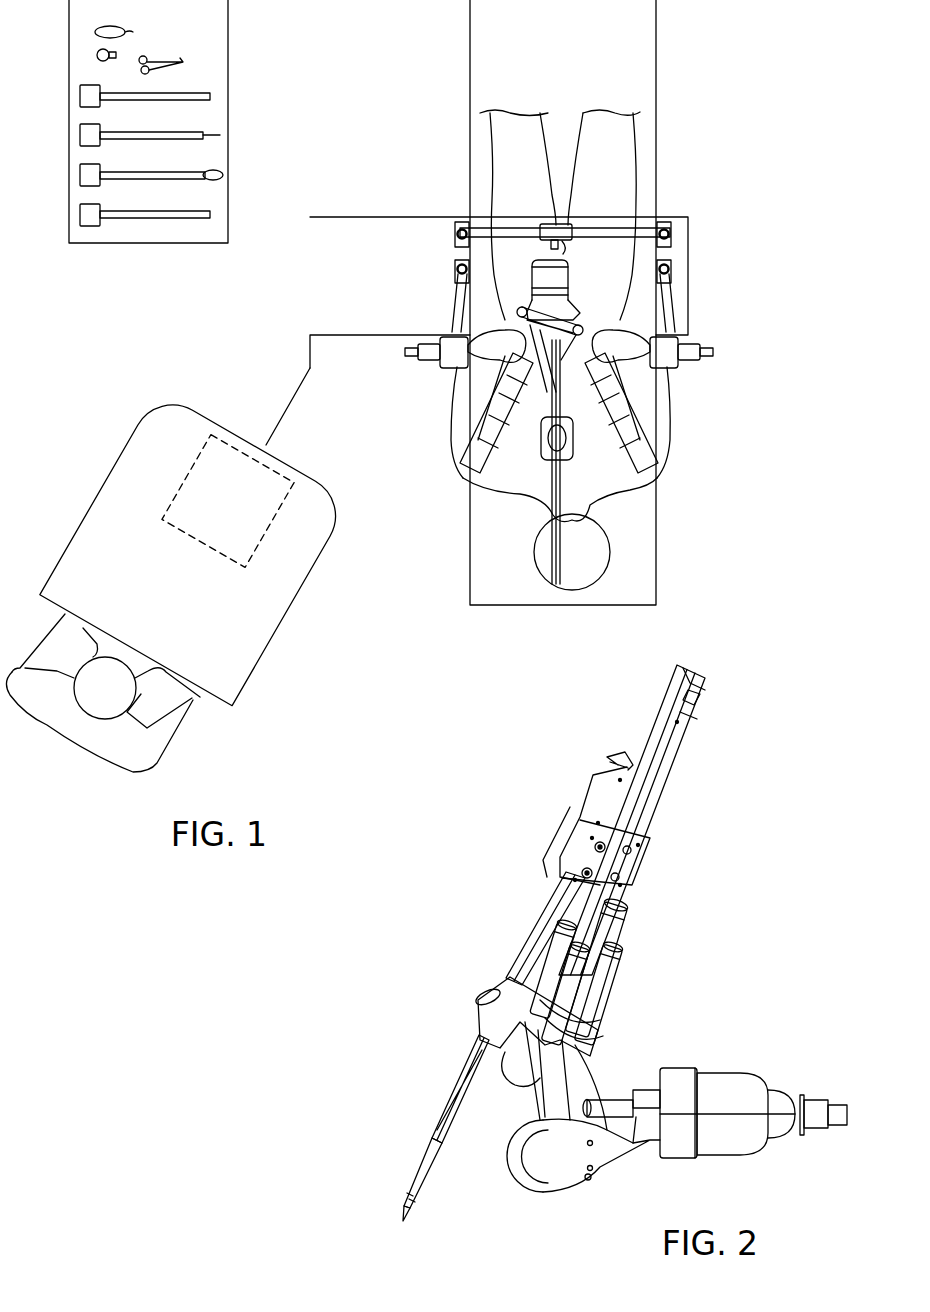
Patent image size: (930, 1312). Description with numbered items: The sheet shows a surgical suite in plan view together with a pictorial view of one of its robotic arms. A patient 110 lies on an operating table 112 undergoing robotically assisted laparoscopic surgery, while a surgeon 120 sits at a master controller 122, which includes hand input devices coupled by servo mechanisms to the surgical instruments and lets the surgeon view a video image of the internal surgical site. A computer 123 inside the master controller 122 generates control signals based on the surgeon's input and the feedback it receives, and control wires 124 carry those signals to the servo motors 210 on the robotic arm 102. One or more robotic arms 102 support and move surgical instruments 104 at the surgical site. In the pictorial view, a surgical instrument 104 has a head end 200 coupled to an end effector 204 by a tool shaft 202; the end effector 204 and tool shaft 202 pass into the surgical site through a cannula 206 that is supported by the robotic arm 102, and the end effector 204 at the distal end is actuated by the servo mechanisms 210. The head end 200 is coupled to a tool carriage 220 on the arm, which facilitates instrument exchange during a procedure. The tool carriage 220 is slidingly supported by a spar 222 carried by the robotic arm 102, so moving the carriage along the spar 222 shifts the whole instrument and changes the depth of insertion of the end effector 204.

In FIG. 1, the robotic arm 102 is at (511, 400).
In FIG. 2, the robotic arm 102 is at (625, 964).
In FIG. 1, the surgical instrument 104 is at (512, 440).
In FIG. 2, the surgical instrument 104 is at (573, 964).
In FIG. 1, the patient 110 is at (610, 553).
In FIG. 1, the operating table 112 is at (470, 80).
In FIG. 1, the surgeon 120 is at (176, 744).
In FIG. 1, the master controller 122 is at (294, 622).
In FIG. 1, the computer 123 is at (229, 446).
In FIG. 1, the control wires 124 is at (286, 418).
In FIG. 2, the head end 200 is at (583, 787).
In FIG. 2, the tool shaft 202 is at (434, 1170).
In FIG. 2, the end effector 204 is at (406, 1221).
In FIG. 2, the cannula 206 is at (468, 1083).
In FIG. 2, the servo motors 210 is at (656, 930).
In FIG. 2, the tool carriage 220 is at (655, 808).
In FIG. 2, the spar 222 is at (670, 753).